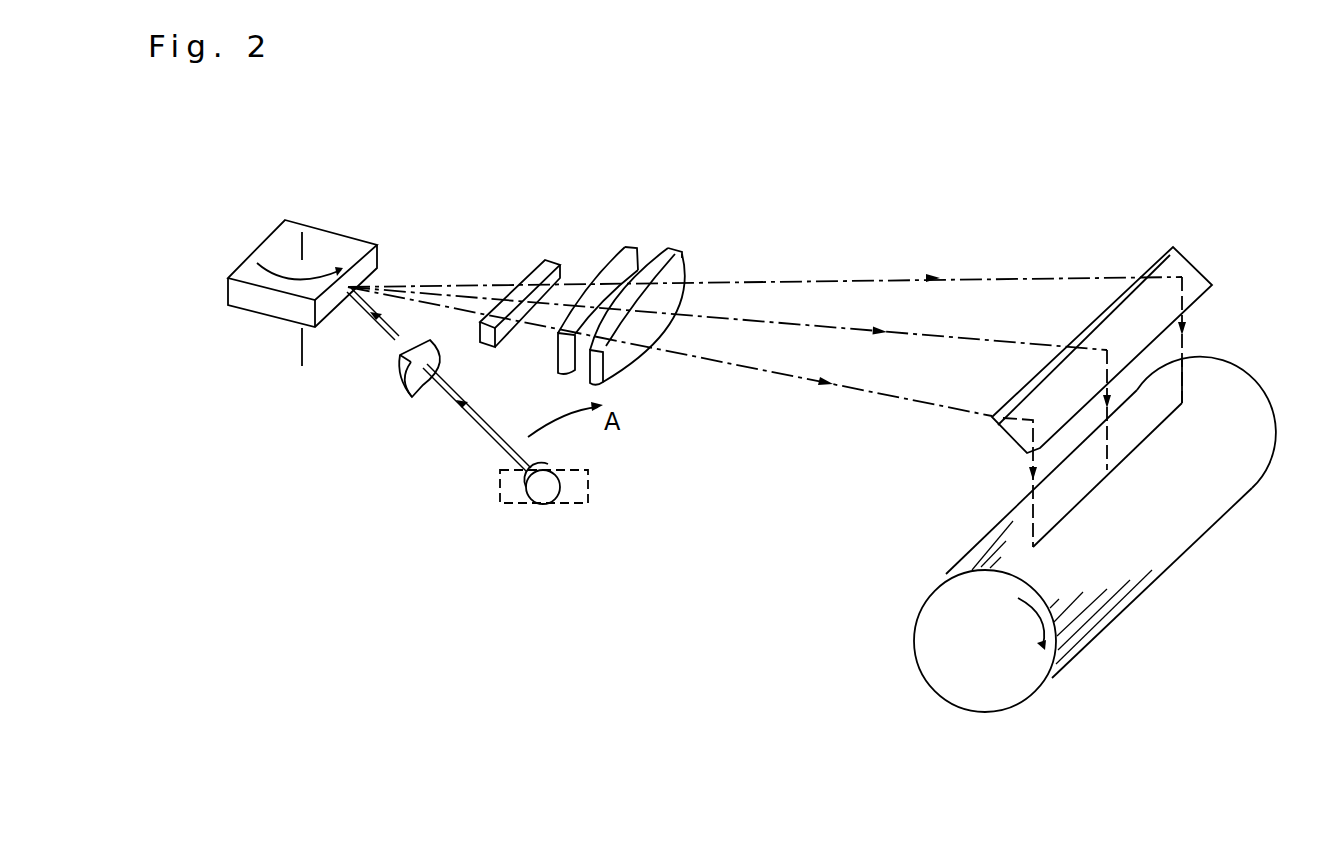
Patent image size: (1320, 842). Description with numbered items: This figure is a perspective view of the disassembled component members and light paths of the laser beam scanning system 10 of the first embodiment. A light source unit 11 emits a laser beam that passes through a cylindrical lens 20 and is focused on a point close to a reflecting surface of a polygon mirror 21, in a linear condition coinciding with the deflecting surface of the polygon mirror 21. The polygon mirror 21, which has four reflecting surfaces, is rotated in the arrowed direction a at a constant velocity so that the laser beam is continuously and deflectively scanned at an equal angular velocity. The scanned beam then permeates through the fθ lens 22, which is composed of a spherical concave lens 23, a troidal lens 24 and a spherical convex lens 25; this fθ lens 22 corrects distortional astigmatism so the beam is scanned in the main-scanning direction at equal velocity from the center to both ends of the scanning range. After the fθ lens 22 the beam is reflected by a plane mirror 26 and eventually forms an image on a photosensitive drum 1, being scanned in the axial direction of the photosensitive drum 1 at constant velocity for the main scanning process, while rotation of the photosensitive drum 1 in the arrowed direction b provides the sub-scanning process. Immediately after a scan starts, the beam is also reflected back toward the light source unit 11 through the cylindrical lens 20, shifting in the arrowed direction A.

The photosensitive drum 1 is at (925, 597).
The laser beam scanning system 10 is at (512, 186).
The light source unit 11 is at (543, 510).
The cylindrical lens 20 is at (425, 395).
The polygon mirror 21 is at (343, 232).
The fθ lens 22 is at (653, 214).
The spherical concave lens 23 is at (552, 260).
The troidal lens 24 is at (630, 247).
The spherical convex lens 25 is at (690, 253).
The plane mirror 26 is at (1147, 262).